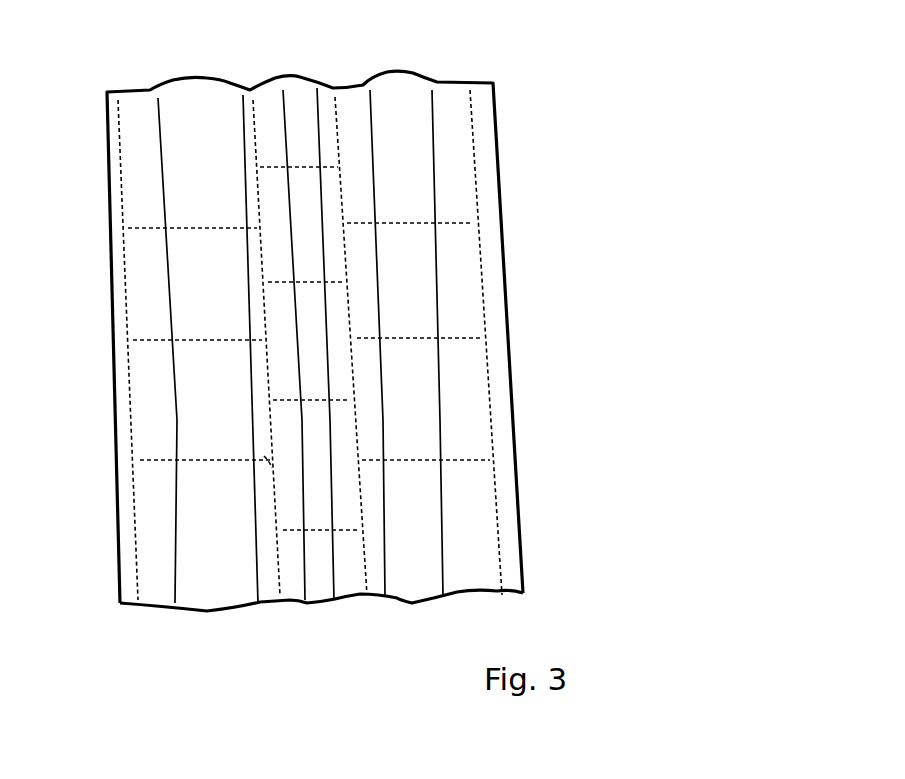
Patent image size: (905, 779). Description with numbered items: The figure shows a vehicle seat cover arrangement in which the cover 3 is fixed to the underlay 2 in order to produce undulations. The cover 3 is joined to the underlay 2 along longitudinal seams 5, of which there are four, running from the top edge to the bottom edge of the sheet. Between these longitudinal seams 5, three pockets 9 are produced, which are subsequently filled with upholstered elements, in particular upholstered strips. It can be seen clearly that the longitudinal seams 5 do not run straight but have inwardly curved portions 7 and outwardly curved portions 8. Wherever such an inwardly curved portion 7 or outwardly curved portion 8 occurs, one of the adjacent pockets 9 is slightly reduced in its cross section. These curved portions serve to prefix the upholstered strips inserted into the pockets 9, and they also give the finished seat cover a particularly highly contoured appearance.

The underlay 2 is at (513, 148).
The cover 3 is at (389, 161).
The longitudinal seams 5 is at (456, 110).
The inwardly curved portions 7 is at (263, 400).
The outwardly curved portions 8 is at (270, 461).
The pockets 9 is at (202, 631).